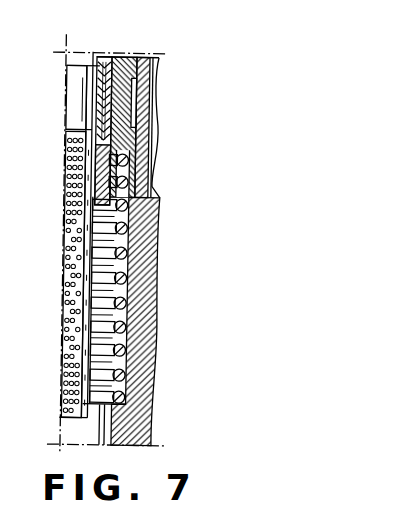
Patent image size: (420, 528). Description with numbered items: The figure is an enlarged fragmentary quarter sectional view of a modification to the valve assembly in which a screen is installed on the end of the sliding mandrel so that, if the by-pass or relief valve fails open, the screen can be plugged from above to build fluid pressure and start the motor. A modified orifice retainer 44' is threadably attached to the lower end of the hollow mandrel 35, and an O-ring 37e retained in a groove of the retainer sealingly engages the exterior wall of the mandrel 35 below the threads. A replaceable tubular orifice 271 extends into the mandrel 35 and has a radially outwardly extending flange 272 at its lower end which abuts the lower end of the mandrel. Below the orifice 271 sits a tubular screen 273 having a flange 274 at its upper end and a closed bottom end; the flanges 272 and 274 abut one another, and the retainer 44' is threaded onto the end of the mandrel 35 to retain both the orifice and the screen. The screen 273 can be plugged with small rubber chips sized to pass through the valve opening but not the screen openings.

The hollow mandrel 35 is at (97, 58).
The replaceable tubular orifice 271 is at (82, 93).
The tubular screen 273 is at (64, 188).
The flange 272 is at (128, 127).
The O-ring 37e is at (136, 112).
The modified orifice retainer 44' is at (179, 128).
The flange 274 is at (126, 155).